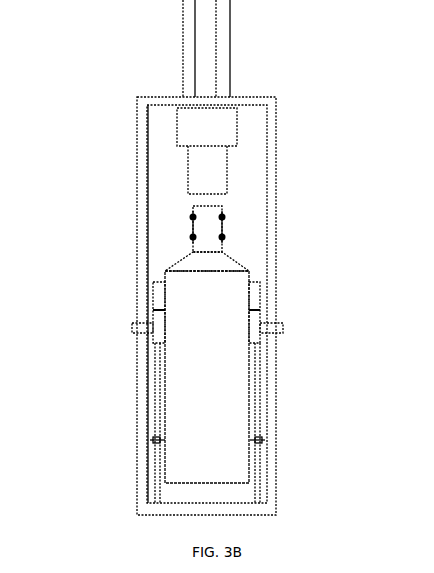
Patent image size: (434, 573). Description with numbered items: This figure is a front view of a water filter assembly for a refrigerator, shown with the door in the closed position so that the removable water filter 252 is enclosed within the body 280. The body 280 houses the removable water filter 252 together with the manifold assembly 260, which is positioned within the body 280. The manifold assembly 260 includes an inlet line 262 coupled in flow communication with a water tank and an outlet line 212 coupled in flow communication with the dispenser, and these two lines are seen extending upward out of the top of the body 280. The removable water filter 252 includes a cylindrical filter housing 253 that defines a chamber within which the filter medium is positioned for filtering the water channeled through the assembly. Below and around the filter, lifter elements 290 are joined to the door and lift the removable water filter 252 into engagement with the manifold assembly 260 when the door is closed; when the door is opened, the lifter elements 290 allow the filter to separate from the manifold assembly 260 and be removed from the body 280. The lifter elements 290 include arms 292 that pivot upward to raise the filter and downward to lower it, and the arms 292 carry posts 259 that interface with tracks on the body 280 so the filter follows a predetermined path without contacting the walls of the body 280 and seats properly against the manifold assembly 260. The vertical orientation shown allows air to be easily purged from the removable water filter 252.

The outlet line 212 is at (192, 29).
The inlet line 262 is at (220, 24).
The manifold assembly 260 is at (220, 116).
The body 280 is at (270, 185).
The arms 292 is at (157, 319).
The posts 259 is at (132, 326).
The cylindrical filter housing 253 is at (192, 400).
The removable water filter 252 is at (217, 367).
The lifter elements 290 is at (255, 392).